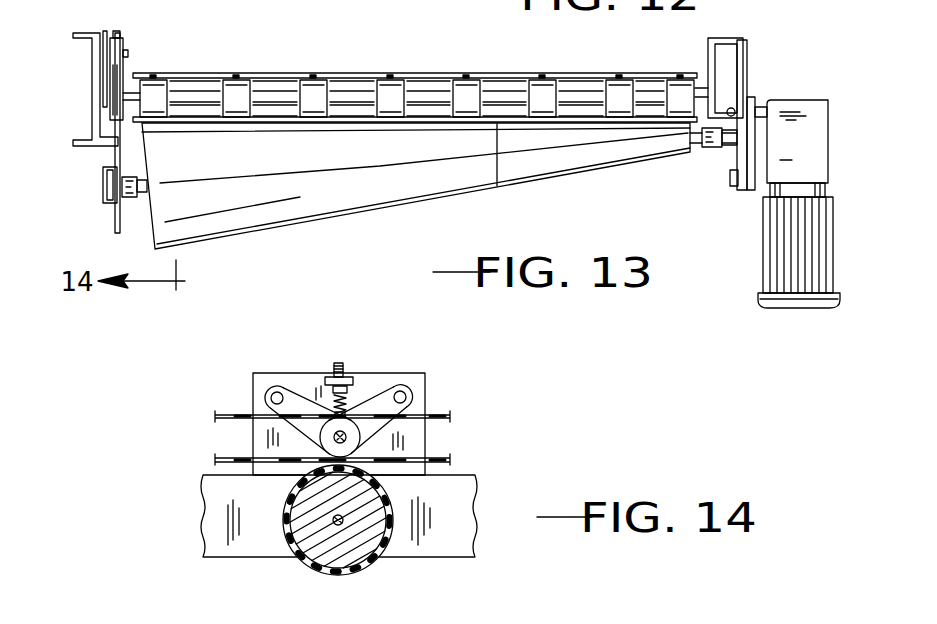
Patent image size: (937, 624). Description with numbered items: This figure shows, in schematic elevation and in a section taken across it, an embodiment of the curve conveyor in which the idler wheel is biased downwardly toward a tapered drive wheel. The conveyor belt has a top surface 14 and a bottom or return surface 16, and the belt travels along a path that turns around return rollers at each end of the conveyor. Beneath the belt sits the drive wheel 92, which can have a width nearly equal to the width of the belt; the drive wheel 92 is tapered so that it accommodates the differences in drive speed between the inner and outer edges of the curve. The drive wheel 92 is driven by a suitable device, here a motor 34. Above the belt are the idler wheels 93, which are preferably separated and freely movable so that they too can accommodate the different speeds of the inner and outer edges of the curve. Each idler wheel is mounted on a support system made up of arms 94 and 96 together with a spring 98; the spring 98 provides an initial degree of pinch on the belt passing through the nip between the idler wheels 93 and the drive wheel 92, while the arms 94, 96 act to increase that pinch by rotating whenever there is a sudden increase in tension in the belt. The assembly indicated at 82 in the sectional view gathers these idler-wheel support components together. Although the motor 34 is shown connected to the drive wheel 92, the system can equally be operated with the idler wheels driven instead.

In FIG. 13, the top surface 14 is at (364, 73).
In FIG. 13, the bottom or return surface 16 is at (497, 186).
In FIG. 13, the motor 34 is at (797, 100).
In FIG. 14, the tensioning assembly 82 is at (234, 397).
In FIG. 13, the drive wheel 92 is at (347, 217).
In FIG. 14, the drive wheel 92 is at (385, 560).
In FIG. 13, the idler wheels 93 is at (466, 80).
In FIG. 14, the idler wheels 93 is at (360, 442).
In FIG. 13, the arm 94 is at (128, 66).
In FIG. 14, the arm 94 is at (262, 386).
In FIG. 14, the arm 96 is at (416, 393).
In FIG. 14, the spring 98 is at (342, 400).